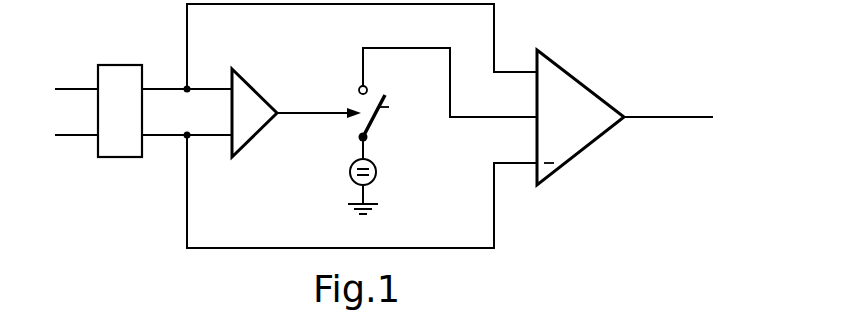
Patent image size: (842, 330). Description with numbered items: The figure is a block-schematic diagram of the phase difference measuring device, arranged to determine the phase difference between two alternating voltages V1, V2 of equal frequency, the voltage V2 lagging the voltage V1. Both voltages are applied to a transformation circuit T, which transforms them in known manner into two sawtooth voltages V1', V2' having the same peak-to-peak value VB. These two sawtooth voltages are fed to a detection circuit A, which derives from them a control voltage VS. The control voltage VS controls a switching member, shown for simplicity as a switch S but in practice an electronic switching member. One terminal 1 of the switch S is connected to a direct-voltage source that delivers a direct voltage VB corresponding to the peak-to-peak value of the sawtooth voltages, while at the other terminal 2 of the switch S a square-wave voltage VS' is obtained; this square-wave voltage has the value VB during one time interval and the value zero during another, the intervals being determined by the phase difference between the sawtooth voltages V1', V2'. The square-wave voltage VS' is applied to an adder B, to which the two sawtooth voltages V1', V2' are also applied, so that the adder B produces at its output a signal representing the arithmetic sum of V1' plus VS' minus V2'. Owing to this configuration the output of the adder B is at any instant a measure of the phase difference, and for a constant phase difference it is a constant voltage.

The first alternating voltage V1 is at (76, 77).
The second alternating voltage V2 is at (76, 123).
The transformation circuit T is at (127, 122).
The first sawtooth voltage V1' is at (187, 76).
The second sawtooth voltage V2' is at (187, 122).
The detection circuit A is at (254, 124).
The control voltage VS is at (319, 101).
The switch S is at (448, 98).
The terminal of the switch 1 is at (370, 138).
The terminal of the switch 2 is at (369, 89).
The direct voltage VB is at (378, 175).
The adder B is at (583, 130).
The square-wave voltage VS' is at (518, 100).